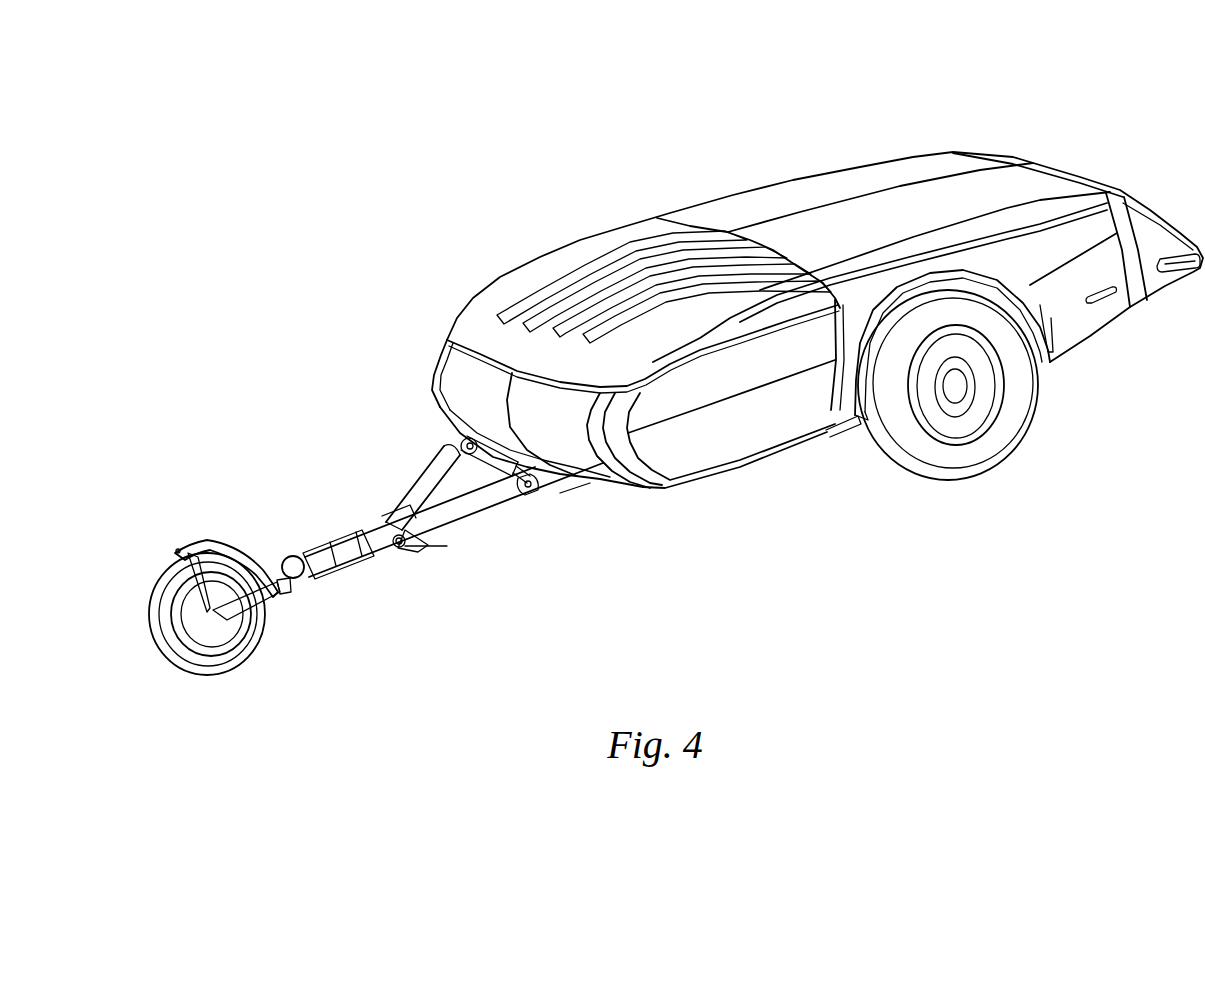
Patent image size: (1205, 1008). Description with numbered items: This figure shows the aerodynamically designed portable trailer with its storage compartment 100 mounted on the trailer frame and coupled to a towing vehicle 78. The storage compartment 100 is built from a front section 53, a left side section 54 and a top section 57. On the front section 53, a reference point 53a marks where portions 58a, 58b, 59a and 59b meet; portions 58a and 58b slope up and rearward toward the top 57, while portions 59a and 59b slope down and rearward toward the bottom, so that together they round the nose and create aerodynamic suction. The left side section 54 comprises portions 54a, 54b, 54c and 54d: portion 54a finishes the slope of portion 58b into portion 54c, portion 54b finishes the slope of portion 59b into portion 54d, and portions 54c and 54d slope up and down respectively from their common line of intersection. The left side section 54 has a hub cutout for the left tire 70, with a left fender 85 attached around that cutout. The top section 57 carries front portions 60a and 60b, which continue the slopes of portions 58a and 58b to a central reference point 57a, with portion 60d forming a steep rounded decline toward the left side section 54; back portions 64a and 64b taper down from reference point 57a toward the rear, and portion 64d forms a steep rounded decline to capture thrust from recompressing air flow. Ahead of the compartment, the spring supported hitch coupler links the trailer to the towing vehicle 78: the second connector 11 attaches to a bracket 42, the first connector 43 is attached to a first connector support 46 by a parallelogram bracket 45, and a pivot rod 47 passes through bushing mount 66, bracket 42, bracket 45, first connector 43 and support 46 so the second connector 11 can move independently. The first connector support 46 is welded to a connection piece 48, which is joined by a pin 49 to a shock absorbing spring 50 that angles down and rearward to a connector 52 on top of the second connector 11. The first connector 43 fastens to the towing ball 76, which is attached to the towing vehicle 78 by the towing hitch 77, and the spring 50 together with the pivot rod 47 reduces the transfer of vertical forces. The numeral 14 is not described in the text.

The storage compartment 100 is at (610, 171).
The top section 57 is at (718, 209).
The reference point 57a is at (736, 234).
The front right portion 60a is at (610, 288).
The front left portion 60b is at (677, 304).
The portion 60d is at (777, 293).
The back right portion 64a is at (770, 200).
The back left portion 64b is at (900, 210).
The portion 64d is at (1017, 215).
The portion 58a is at (457, 380).
The portion 58b is at (558, 395).
The front section 53 is at (428, 392).
The reference point 53a is at (506, 398).
The portion 59a is at (490, 432).
The portion 59b is at (590, 462).
The left side section 54 is at (722, 452).
The portion 54a is at (627, 410).
The portion 54b is at (630, 454).
The portion 54c is at (770, 360).
The portion 54d is at (775, 413).
The frame 14 is at (810, 450).
The left fender 85 is at (1050, 327).
The left tire 70 is at (1010, 420).
The second connector 11 is at (500, 515).
The bracket 42 is at (430, 547).
The first connector 43 is at (357, 527).
The parallelogram bracket 45 is at (407, 510).
The first connector support 46 is at (425, 473).
The pivot rod 47 is at (406, 551).
The connection piece 48 is at (476, 458).
The pin 49 is at (461, 443).
The shock absorbing spring 50 is at (500, 450).
The connector 52 is at (530, 487).
The bushing mount 66 is at (397, 548).
The towing ball 76 is at (282, 543).
The towing hitch 77 is at (257, 610).
The towing vehicle 78 is at (200, 522).